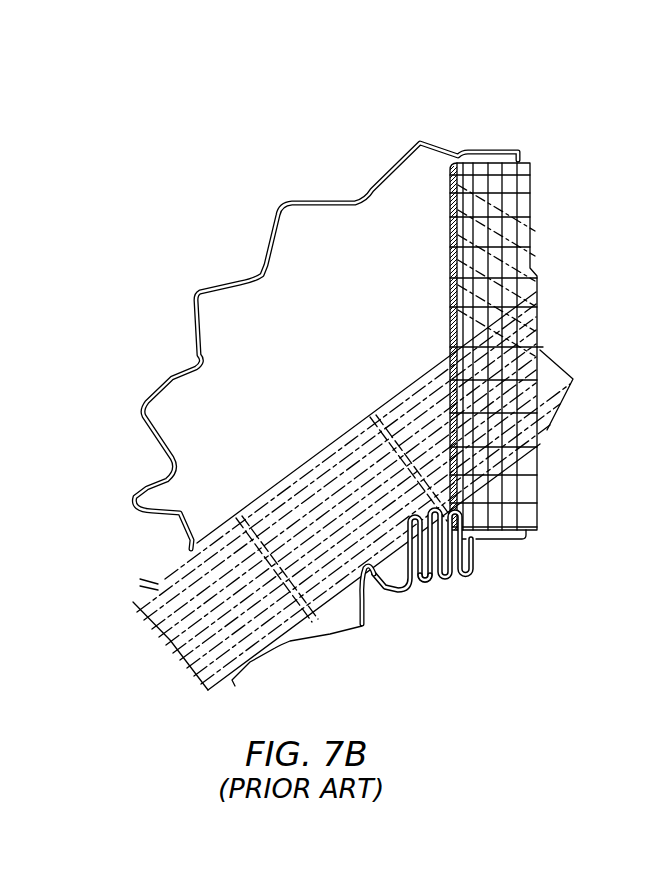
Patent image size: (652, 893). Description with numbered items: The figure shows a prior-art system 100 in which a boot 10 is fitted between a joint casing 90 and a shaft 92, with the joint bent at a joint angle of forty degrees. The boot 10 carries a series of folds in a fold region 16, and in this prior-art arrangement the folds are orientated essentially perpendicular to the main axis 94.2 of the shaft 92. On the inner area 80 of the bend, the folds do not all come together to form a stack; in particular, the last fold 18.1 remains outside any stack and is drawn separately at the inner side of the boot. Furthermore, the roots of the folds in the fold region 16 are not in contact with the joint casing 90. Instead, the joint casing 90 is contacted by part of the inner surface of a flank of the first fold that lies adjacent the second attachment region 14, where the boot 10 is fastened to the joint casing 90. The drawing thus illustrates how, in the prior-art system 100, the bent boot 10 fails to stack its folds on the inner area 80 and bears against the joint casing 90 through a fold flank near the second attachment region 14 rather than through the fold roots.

The system 100 is at (405, 90).
The boot 10 is at (292, 166).
The joint casing 90 is at (518, 192).
The shaft 92 is at (558, 380).
The main axis 94.2 is at (176, 642).
The second attachment region 14 is at (498, 548).
The fold region 16 is at (468, 602).
The inner area 80 is at (436, 640).
The last fold 18.1 is at (359, 642).